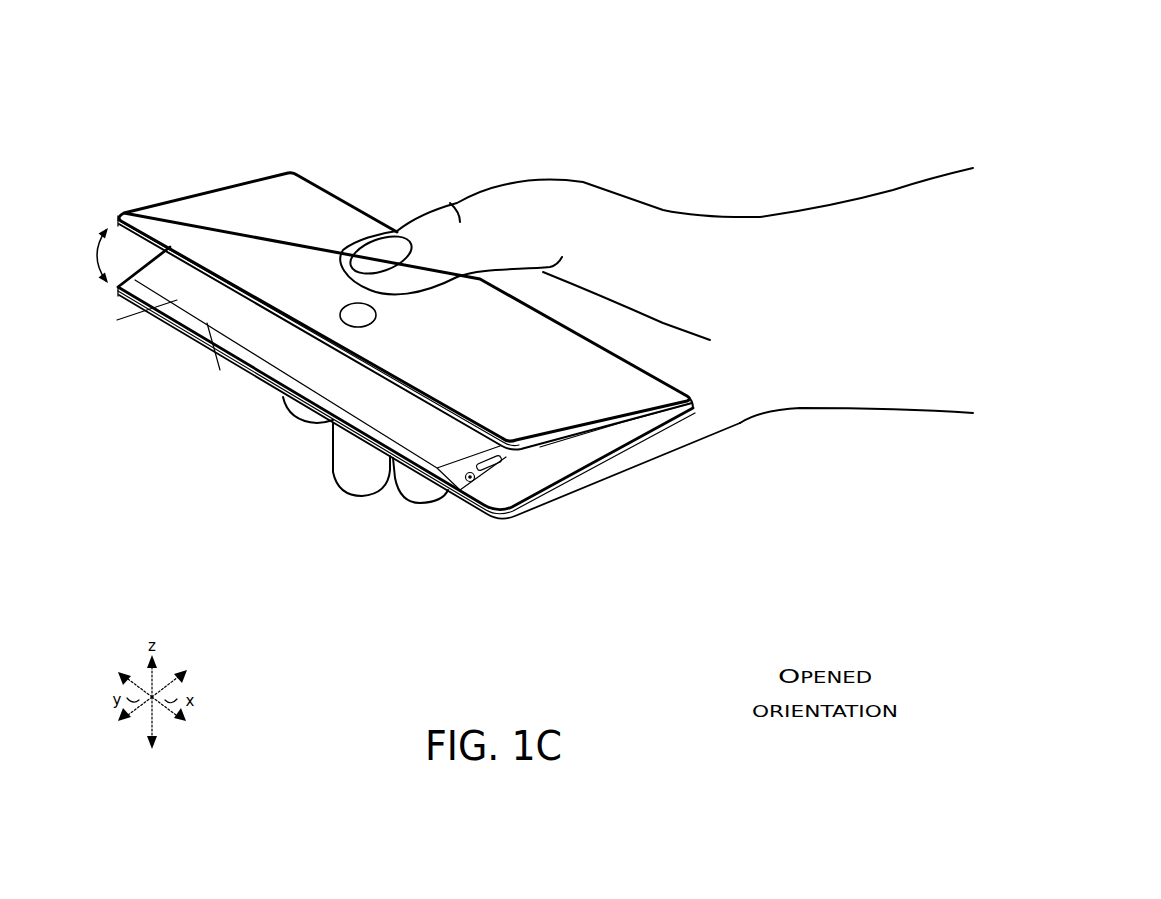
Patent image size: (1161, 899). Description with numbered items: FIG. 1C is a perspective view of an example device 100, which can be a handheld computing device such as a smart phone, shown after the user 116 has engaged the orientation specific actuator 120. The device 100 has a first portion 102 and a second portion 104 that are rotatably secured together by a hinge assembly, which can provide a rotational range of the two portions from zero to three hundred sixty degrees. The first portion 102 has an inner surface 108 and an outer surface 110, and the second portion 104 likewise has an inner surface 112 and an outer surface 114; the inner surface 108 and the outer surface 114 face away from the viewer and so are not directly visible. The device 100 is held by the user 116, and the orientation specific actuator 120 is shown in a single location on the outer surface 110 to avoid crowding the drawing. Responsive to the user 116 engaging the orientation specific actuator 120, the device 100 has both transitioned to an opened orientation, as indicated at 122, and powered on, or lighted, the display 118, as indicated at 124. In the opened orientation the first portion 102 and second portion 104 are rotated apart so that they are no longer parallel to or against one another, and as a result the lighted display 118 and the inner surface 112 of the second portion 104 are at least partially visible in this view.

The device 100 is at (222, 66).
The first portion 102 is at (194, 190).
The second portion 104 is at (527, 524).
The inner surface 108 is at (579, 444).
The outer surface 110 is at (280, 256).
The inner surface 112 is at (560, 473).
The outer surface 114 is at (476, 521).
The user 116 is at (661, 201).
The display 118 is at (275, 357).
The orientation specific actuator 120 is at (386, 326).
The opened orientation 122 is at (83, 248).
The powered-on display indication 124 is at (197, 320).